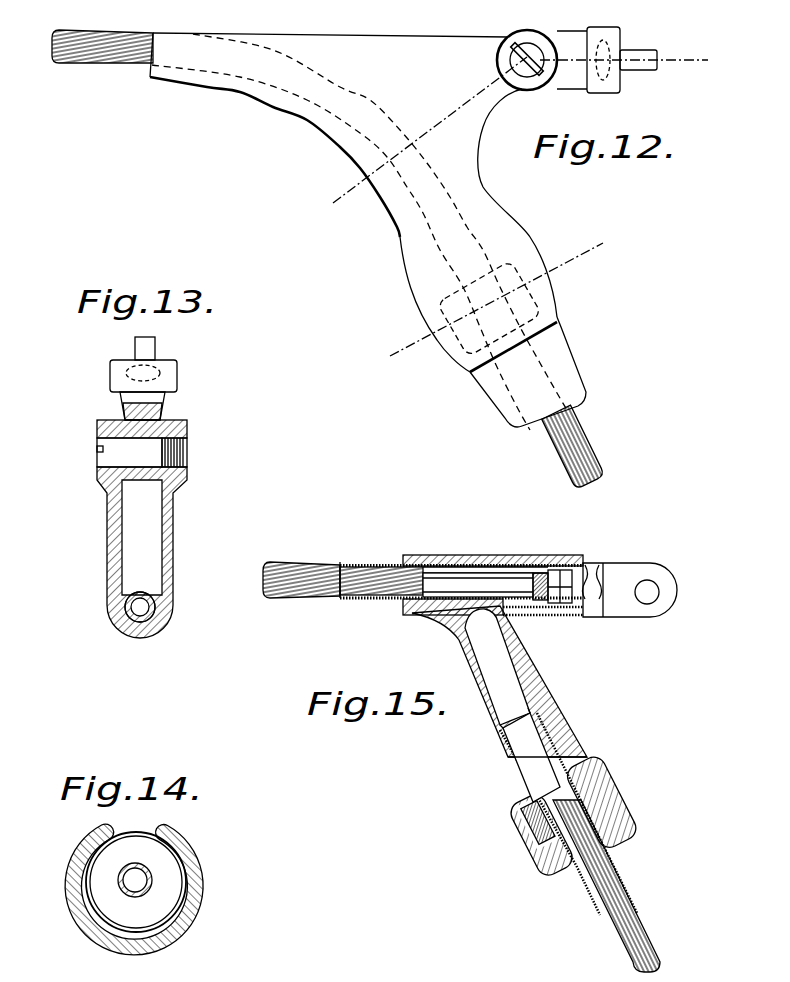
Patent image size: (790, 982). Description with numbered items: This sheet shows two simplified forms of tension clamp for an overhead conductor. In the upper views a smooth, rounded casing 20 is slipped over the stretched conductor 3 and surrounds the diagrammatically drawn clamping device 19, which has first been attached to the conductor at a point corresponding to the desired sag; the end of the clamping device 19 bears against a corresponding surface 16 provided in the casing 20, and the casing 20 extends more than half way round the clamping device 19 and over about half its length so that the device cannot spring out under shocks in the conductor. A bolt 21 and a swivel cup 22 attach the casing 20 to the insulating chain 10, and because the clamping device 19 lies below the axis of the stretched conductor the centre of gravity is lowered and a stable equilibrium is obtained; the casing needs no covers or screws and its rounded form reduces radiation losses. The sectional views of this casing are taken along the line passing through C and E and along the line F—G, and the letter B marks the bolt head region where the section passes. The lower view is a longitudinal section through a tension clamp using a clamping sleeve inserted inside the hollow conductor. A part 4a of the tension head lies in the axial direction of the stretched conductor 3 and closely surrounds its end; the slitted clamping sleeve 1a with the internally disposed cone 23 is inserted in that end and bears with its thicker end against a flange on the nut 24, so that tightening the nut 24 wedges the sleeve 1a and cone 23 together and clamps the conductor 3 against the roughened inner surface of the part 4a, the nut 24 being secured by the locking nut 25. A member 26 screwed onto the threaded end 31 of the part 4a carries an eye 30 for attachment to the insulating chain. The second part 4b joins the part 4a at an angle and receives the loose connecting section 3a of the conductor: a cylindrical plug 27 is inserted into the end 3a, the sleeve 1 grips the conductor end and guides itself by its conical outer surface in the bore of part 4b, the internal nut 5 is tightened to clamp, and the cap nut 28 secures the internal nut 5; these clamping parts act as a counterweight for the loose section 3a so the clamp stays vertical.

In FIG. 12, the conductor 3 is at (133, 31).
In FIG. 13, the conductor 3 is at (155, 607).
In FIG. 14, the conductor 3 is at (150, 875).
In FIG. 15, the conductor 3 is at (323, 592).
In FIG. 12, the casing 20 is at (369, 47).
In FIG. 13, the casing 20 is at (175, 530).
In FIG. 14, the casing 20 is at (190, 920).
In FIG. 12, the clamping device 19 is at (492, 385).
In FIG. 14, the clamping device 19 is at (170, 890).
In FIG. 12, the surface 16 is at (512, 258).
In FIG. 12, the bolt 21 is at (527, 90).
In FIG. 13, the bolt 21 is at (100, 455).
In FIG. 12, the swivel cup 22 is at (621, 37).
In FIG. 13, the swivel cup 22 is at (177, 375).
In FIG. 12, the insulating chain 10 is at (647, 53).
In FIG. 13, the insulating chain 10 is at (150, 352).
In FIG. 15, the cone 23 is at (437, 580).
In FIG. 15, the clamping sleeve 1a is at (485, 575).
In FIG. 15, the nut 24 is at (553, 572).
In FIG. 15, the locking nut 25 is at (589, 574).
In FIG. 15, the member 26 is at (598, 612).
In FIG. 15, the eye 30 is at (647, 605).
In FIG. 15, the threaded end 31 is at (533, 617).
In FIG. 15, the part of the tension head 4a is at (437, 622).
In FIG. 15, the second part of the head 4b is at (533, 720).
In FIG. 15, the sleeve 1 is at (553, 747).
In FIG. 15, the cylindrical plug 27 is at (530, 750).
In FIG. 15, the internal nut 5 is at (520, 828).
In FIG. 15, the cap nut 28 is at (543, 857).
In FIG. 15, the loose connecting section of the conductor 3a is at (617, 930).
In FIG. 12, the section point B is at (540, 44).
In FIG. 12, the section line point C is at (634, 60).
In FIG. 12, the section line point E is at (416, 139).
In FIG. 12, the section line point F is at (506, 293).
In FIG. 12, the section line point G is at (378, 355).